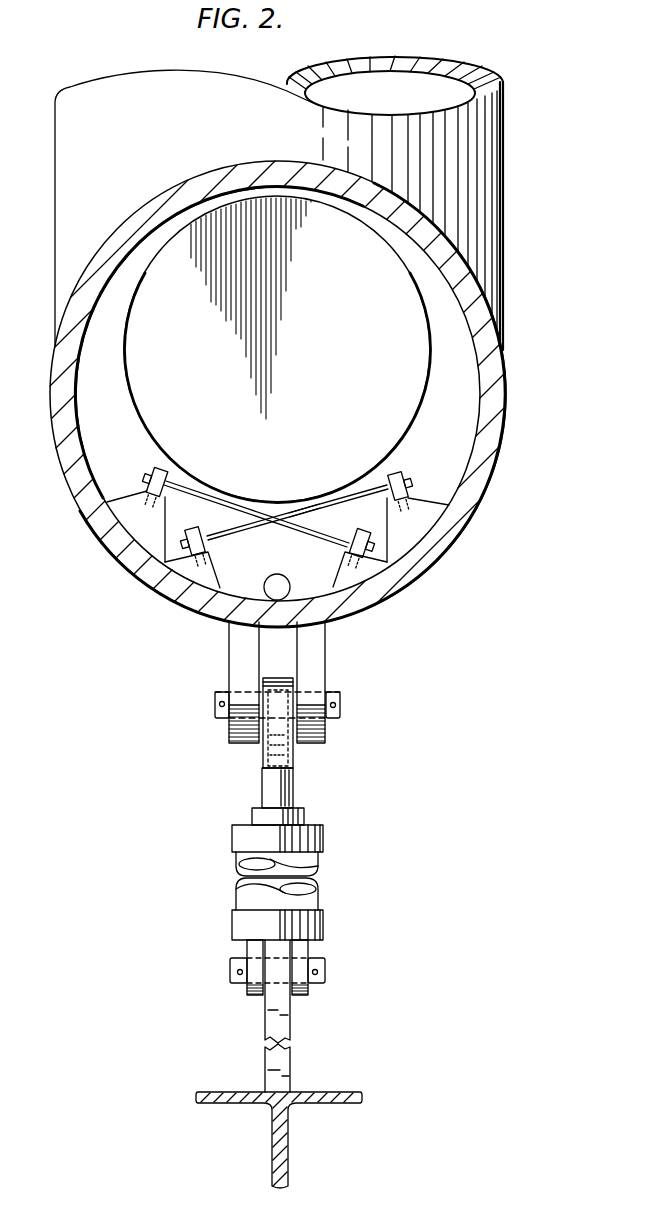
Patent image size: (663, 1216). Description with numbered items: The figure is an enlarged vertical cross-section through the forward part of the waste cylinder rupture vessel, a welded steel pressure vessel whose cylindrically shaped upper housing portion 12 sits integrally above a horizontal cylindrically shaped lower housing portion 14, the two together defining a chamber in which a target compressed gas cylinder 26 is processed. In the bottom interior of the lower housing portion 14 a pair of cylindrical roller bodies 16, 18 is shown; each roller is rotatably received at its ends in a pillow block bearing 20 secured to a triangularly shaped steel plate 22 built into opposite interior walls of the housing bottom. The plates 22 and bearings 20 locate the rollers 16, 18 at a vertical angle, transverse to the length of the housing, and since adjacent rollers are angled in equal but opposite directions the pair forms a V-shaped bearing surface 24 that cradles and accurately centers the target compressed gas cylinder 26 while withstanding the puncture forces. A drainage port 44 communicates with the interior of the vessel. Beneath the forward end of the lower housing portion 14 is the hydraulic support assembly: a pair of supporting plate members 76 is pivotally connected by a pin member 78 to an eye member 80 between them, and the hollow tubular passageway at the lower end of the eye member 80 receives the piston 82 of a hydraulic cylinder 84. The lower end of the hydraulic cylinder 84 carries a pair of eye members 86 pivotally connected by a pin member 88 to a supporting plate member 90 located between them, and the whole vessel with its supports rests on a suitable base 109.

The upper housing portion 12 is at (473, 174).
The lower housing portion 14 is at (498, 425).
The cylindrical roller body 16 is at (373, 487).
The cylindrical roller body 18 is at (180, 488).
The pillow block bearing 20 is at (157, 467).
The triangularly shaped steel plate 22 is at (125, 500).
The V-shaped bearing surface 24 is at (307, 501).
The target compressed gas cylinder 26 is at (422, 338).
The drainage port 44 is at (288, 583).
The supporting plate members 76 is at (307, 663).
The pin member 78 is at (343, 695).
The eye member 80 is at (270, 708).
The piston 82 is at (295, 765).
The hydraulic cylinder 84 is at (317, 858).
The eye members 86 is at (252, 947).
The pin member 88 is at (323, 978).
The supporting plate member 90 is at (287, 1018).
The base 109 is at (343, 1090).